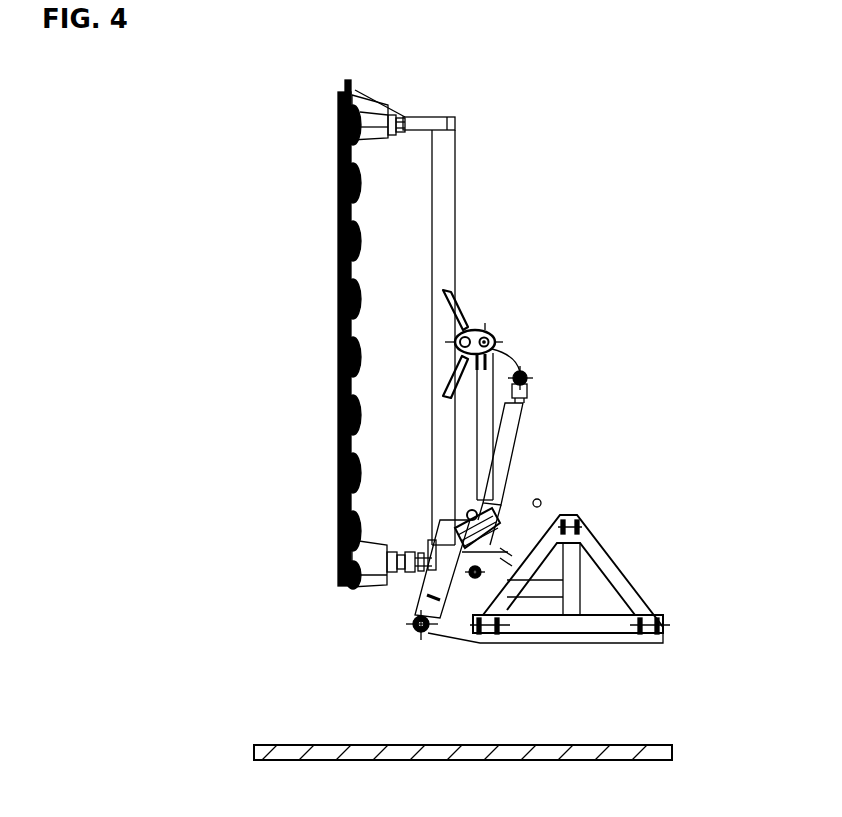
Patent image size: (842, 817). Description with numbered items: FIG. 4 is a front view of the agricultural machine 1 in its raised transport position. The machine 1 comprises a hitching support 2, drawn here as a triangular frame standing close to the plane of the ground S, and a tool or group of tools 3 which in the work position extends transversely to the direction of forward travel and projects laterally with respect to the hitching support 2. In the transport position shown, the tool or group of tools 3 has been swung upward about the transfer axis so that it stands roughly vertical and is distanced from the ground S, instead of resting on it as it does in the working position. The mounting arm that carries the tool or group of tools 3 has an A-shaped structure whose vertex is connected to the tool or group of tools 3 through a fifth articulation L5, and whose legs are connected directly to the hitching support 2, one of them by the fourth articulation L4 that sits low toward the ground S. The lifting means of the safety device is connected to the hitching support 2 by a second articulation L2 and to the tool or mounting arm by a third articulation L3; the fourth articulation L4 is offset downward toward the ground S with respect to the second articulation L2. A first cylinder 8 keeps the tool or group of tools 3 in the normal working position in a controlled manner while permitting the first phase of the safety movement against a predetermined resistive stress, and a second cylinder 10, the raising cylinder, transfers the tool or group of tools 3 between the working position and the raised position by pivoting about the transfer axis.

The agricultural machine 1 is at (648, 240).
The hitching support 2 is at (637, 600).
The tool or group of tools 3 is at (340, 311).
The first cylinder 8 is at (497, 548).
The second cylinder 10 is at (514, 450).
The second articulation L2 is at (469, 592).
The third articulation L3 is at (528, 377).
The fourth articulation L4 is at (415, 640).
The fifth articulation L5 is at (488, 336).
The ground S is at (518, 745).